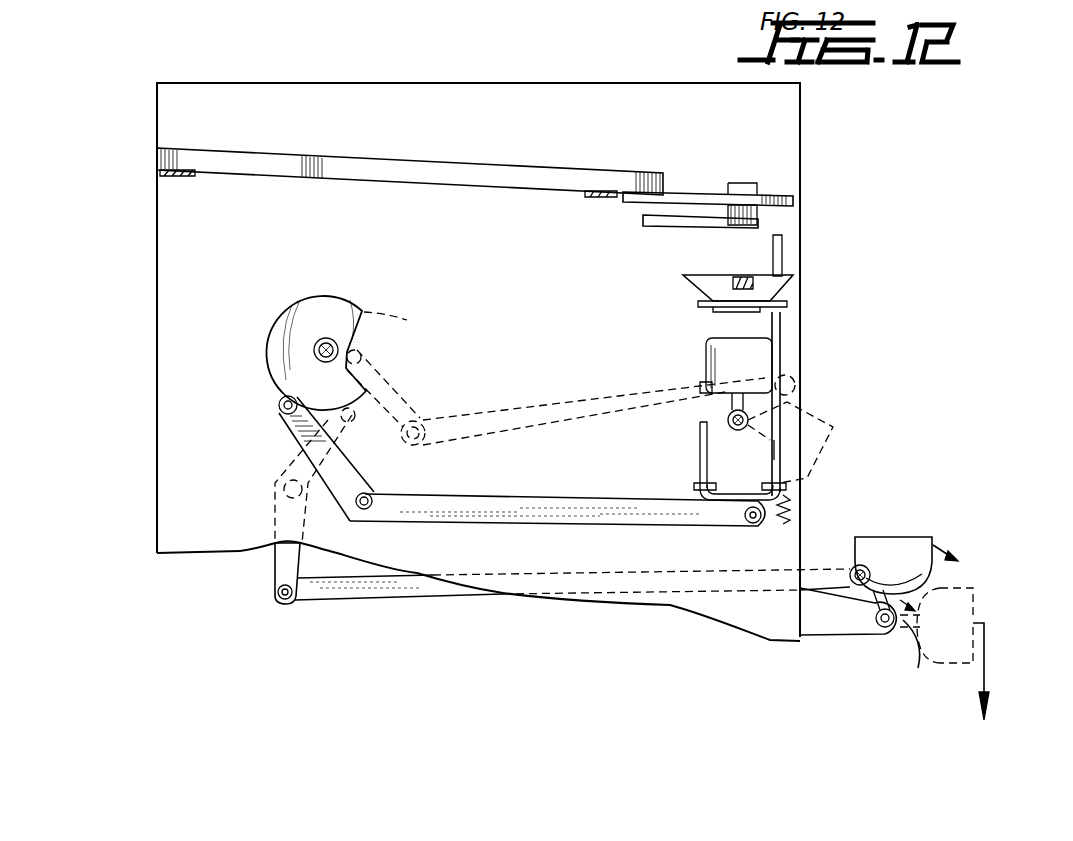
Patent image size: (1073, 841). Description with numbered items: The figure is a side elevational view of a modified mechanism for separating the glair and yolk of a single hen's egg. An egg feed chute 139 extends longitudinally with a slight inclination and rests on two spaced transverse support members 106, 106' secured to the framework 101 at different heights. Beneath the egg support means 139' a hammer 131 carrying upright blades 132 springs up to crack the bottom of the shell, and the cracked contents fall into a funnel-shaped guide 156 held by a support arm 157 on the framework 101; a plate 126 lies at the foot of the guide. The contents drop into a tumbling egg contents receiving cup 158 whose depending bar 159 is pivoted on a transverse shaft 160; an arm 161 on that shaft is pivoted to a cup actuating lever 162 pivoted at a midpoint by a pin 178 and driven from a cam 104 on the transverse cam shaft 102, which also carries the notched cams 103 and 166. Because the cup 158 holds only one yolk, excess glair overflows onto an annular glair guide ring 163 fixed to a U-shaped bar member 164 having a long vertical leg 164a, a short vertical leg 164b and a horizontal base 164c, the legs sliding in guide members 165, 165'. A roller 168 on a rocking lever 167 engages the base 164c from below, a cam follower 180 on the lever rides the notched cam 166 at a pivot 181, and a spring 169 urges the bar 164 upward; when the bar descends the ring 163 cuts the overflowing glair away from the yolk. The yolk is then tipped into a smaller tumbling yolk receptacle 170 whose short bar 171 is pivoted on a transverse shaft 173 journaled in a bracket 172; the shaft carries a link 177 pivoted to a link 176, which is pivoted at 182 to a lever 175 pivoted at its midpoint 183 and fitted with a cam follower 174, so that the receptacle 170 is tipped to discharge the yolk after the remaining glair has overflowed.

The framework 101 is at (801, 118).
The transverse cam shaft 102 is at (278, 302).
The notched cam 103 is at (345, 291).
The cam 104 is at (372, 314).
The transverse support member 106 is at (144, 199).
The transverse support member 106' is at (576, 215).
The plate 126 is at (786, 303).
The hammer 131 is at (654, 223).
The upright blade 132 is at (752, 184).
The egg feed chute 139 is at (410, 187).
The egg support means 139' is at (708, 172).
The funnel-shaped guide 156 is at (710, 277).
The support arm 157 is at (775, 282).
The egg contents receiving cup 158 is at (708, 352).
The depending bar 159 is at (727, 425).
The transverse shaft 160 is at (733, 430).
The arm 161 is at (792, 392).
The cup actuating lever 162 is at (558, 408).
The glair guide ring 163 is at (700, 301).
The U-shaped bar member 164 is at (783, 330).
The long vertical leg 164a is at (774, 452).
The short vertical leg 164b is at (700, 462).
The horizontal base 164c is at (726, 504).
The guide member 165 is at (814, 485).
The guide member 165' is at (676, 523).
The notched cam 166 is at (273, 378).
The rocking lever 167 is at (521, 514).
The roller 168 is at (754, 524).
The spring 169 is at (790, 513).
The tumbling yolk receptacle 170 is at (930, 545).
The short bar 171 is at (885, 562).
The bracket 172 is at (826, 632).
The transverse shaft 173 is at (919, 663).
The cam follower 174 is at (350, 424).
The lever 175 is at (282, 557).
The link 176 is at (399, 590).
The link 177 is at (872, 632).
The pin 178 is at (420, 445).
The cam follower 180 is at (280, 410).
The pivot 181 is at (372, 509).
The pivot 182 is at (283, 600).
The pivot 183 is at (283, 487).